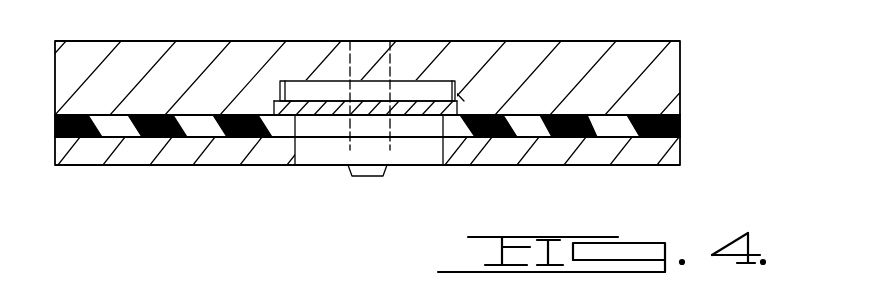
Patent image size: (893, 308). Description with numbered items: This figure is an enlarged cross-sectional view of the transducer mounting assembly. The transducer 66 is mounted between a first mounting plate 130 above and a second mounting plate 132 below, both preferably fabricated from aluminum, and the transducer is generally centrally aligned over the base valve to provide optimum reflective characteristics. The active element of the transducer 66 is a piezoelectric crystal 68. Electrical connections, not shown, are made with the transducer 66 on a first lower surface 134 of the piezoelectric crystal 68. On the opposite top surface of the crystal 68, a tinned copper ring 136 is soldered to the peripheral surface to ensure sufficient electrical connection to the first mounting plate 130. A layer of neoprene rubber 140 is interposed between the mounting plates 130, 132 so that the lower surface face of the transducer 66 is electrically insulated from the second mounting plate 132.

The transducer 66 is at (708, 103).
The first mounting plate 130 is at (641, 63).
The second mounting plate 132 is at (673, 157).
The layer of neoprene rubber 140 is at (680, 126).
The tinned copper ring 136 is at (315, 102).
The piezoelectric crystal 68 is at (342, 110).
The first lower surface 134 is at (448, 117).